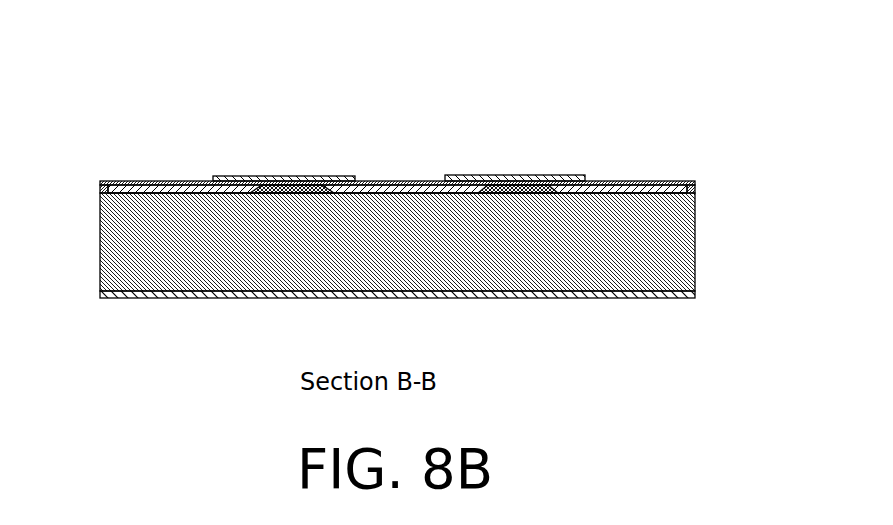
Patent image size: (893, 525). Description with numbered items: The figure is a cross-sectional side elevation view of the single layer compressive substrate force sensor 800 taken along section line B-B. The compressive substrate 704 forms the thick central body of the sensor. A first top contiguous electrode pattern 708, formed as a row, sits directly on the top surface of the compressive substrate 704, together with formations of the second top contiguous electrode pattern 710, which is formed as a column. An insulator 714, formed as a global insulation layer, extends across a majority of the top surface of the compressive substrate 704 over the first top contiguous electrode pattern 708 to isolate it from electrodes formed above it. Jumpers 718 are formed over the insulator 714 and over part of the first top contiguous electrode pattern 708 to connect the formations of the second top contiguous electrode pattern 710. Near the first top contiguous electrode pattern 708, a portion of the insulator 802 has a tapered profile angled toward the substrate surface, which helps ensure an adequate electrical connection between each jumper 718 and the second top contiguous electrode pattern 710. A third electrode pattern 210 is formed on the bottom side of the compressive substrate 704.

The single layer compressive substrate force sensor 800 is at (689, 52).
The compressive substrate 704 is at (683, 262).
The third electrode pattern 210 is at (108, 298).
The first top contiguous electrode pattern 708 is at (258, 190).
The second top contiguous electrode pattern 710 is at (138, 193).
The insulator 714 is at (250, 181).
The jumper 718 is at (340, 177).
The tapered portion of the insulator 802 is at (274, 181).